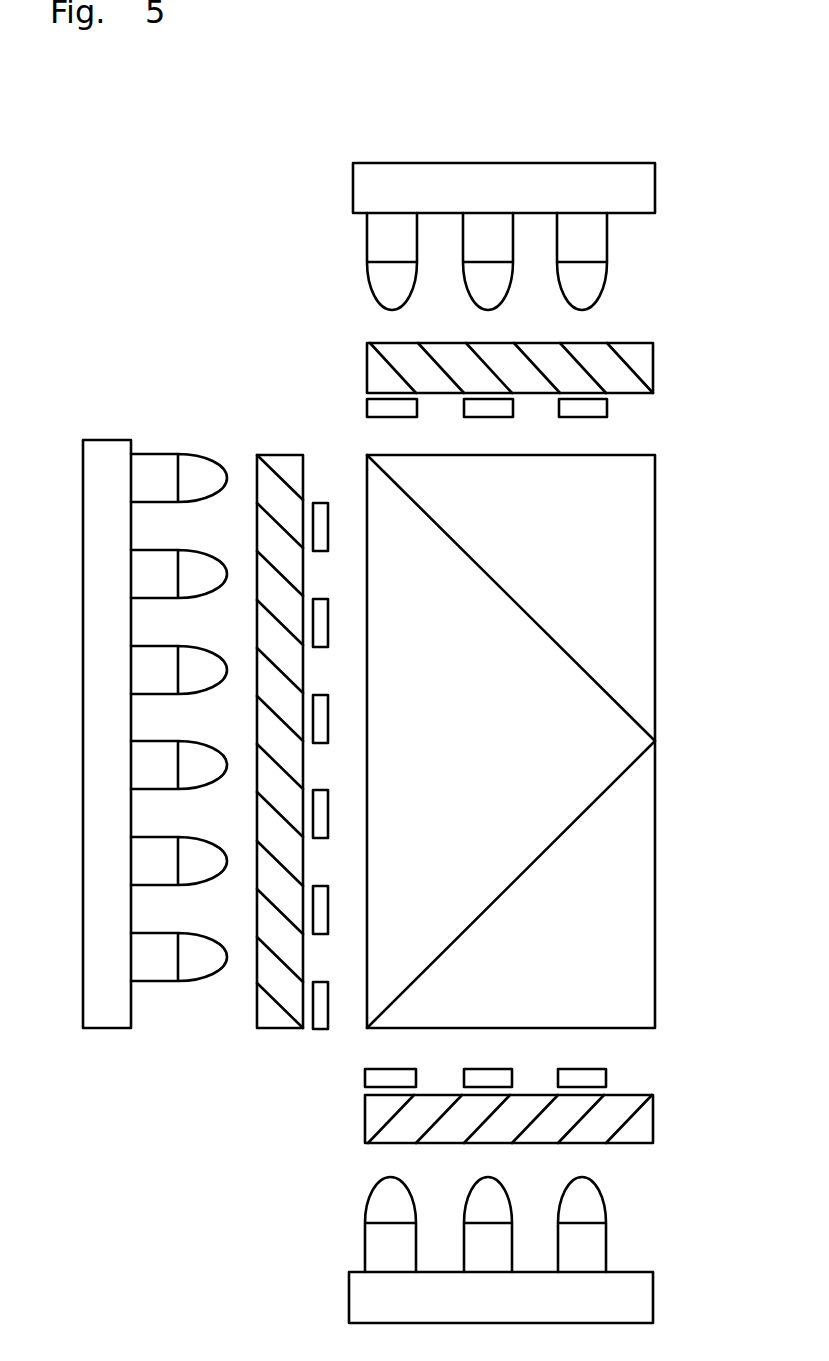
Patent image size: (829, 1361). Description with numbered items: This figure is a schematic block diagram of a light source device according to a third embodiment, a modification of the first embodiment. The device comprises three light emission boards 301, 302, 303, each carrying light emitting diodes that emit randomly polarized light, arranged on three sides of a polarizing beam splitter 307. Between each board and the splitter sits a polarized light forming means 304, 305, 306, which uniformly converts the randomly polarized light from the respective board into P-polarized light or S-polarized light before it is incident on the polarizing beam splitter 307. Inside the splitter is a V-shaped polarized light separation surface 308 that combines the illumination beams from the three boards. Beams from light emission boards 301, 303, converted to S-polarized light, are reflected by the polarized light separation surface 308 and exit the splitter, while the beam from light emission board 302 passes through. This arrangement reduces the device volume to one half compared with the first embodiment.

The light emission board 301 is at (655, 168).
The light emission board 302 is at (88, 1028).
The light emission board 303 is at (700, 1257).
The polarized light forming means 304 is at (653, 348).
The polarized light forming means 305 is at (267, 1028).
The polarized light forming means 306 is at (700, 1080).
The polarizing beam splitter 307 is at (676, 829).
The polarized light separation surface 308 is at (497, 582).